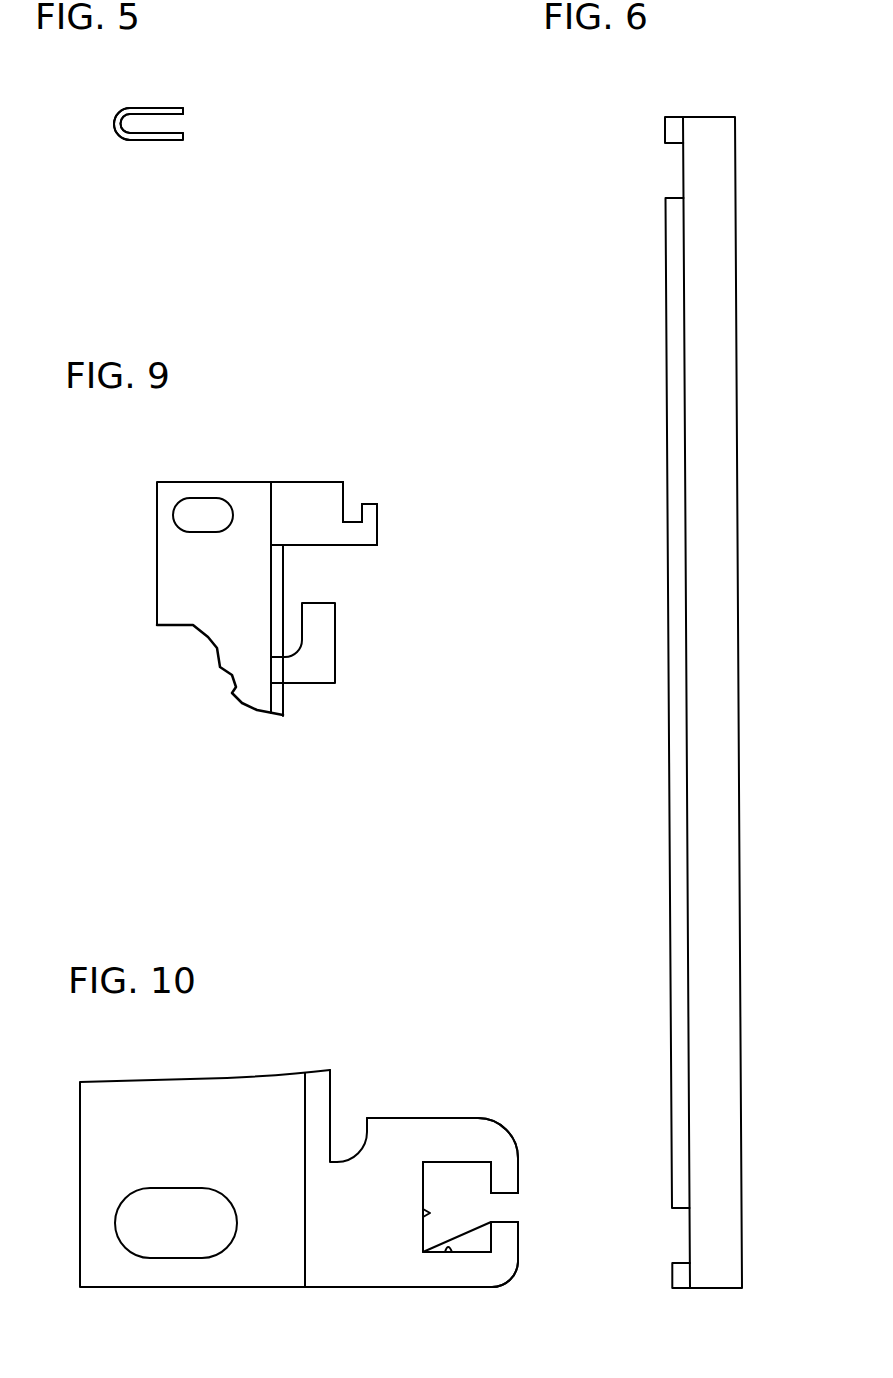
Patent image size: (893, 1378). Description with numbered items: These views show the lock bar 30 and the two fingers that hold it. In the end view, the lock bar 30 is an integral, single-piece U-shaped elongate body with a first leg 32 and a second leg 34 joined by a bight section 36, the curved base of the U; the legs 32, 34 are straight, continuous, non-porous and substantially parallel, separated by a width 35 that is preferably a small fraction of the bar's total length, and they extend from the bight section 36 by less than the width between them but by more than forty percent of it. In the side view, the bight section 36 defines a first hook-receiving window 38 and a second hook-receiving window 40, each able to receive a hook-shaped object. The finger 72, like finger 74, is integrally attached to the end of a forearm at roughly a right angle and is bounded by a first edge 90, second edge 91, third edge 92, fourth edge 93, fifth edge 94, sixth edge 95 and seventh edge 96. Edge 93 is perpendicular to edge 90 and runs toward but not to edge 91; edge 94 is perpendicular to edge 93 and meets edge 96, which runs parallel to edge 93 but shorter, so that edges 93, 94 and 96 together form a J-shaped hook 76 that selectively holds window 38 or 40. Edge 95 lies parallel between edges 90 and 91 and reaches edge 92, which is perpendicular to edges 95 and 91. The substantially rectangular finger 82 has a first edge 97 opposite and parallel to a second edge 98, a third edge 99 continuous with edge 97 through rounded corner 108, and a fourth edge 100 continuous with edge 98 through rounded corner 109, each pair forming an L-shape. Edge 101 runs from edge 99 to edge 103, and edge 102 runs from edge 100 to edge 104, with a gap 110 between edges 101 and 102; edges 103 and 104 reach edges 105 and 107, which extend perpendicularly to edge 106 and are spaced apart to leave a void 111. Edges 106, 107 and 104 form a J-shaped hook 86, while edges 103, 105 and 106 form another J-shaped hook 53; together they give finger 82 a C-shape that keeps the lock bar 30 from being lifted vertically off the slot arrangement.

In FIG. 6, the lock bar 30 is at (737, 312).
In FIG. 5, the first leg 32 is at (162, 140).
In FIG. 5, the second leg 34 is at (164, 108).
In FIG. 5, the width 35 is at (165, 115).
In FIG. 5, the bight section 36 is at (114, 121).
In FIG. 6, the first hook-receiving window 38 is at (683, 172).
In FIG. 6, the second hook-receiving window 40 is at (689, 1235).
In FIG. 10, the J-shaped hook 53 is at (478, 1164).
In FIG. 9, the finger 72 is at (293, 482).
In FIG. 9, the finger 74 is at (337, 635).
In FIG. 9, the J-shaped hook 76 is at (378, 516).
In FIG. 10, the finger 82 is at (405, 1117).
In FIG. 10, the J-shaped hook 86 is at (518, 1260).
In FIG. 9, the first edge 90 is at (283, 482).
In FIG. 9, the second edge 91 is at (325, 545).
In FIG. 9, the third edge 92 is at (378, 532).
In FIG. 9, the fourth edge 93 is at (345, 500).
In FIG. 9, the fifth edge 94 is at (348, 520).
In FIG. 9, the sixth edge 95 is at (370, 505).
In FIG. 9, the seventh edge 96 is at (346, 521).
In FIG. 10, the first edge 97 is at (386, 1117).
In FIG. 10, the second edge 98 is at (349, 1288).
In FIG. 10, the third edge 99 is at (518, 1157).
In FIG. 10, the fourth edge 100 is at (520, 1238).
In FIG. 10, the fifth edge 101 is at (495, 1192).
In FIG. 10, the sixth edge 102 is at (518, 1219).
In FIG. 10, the seventh edge 103 is at (538, 1177).
In FIG. 10, the eighth edge 104 is at (484, 1230).
In FIG. 10, the ninth edge 105 is at (453, 1164).
In FIG. 10, the tenth edge 106 is at (426, 1215).
In FIG. 10, the eleventh edge 107 is at (447, 1253).
In FIG. 10, the rounded corner 108 is at (505, 1127).
In FIG. 10, the rounded corner 109 is at (508, 1280).
In FIG. 10, the gap 110 is at (497, 1193).
In FIG. 10, the void 111 is at (425, 1184).